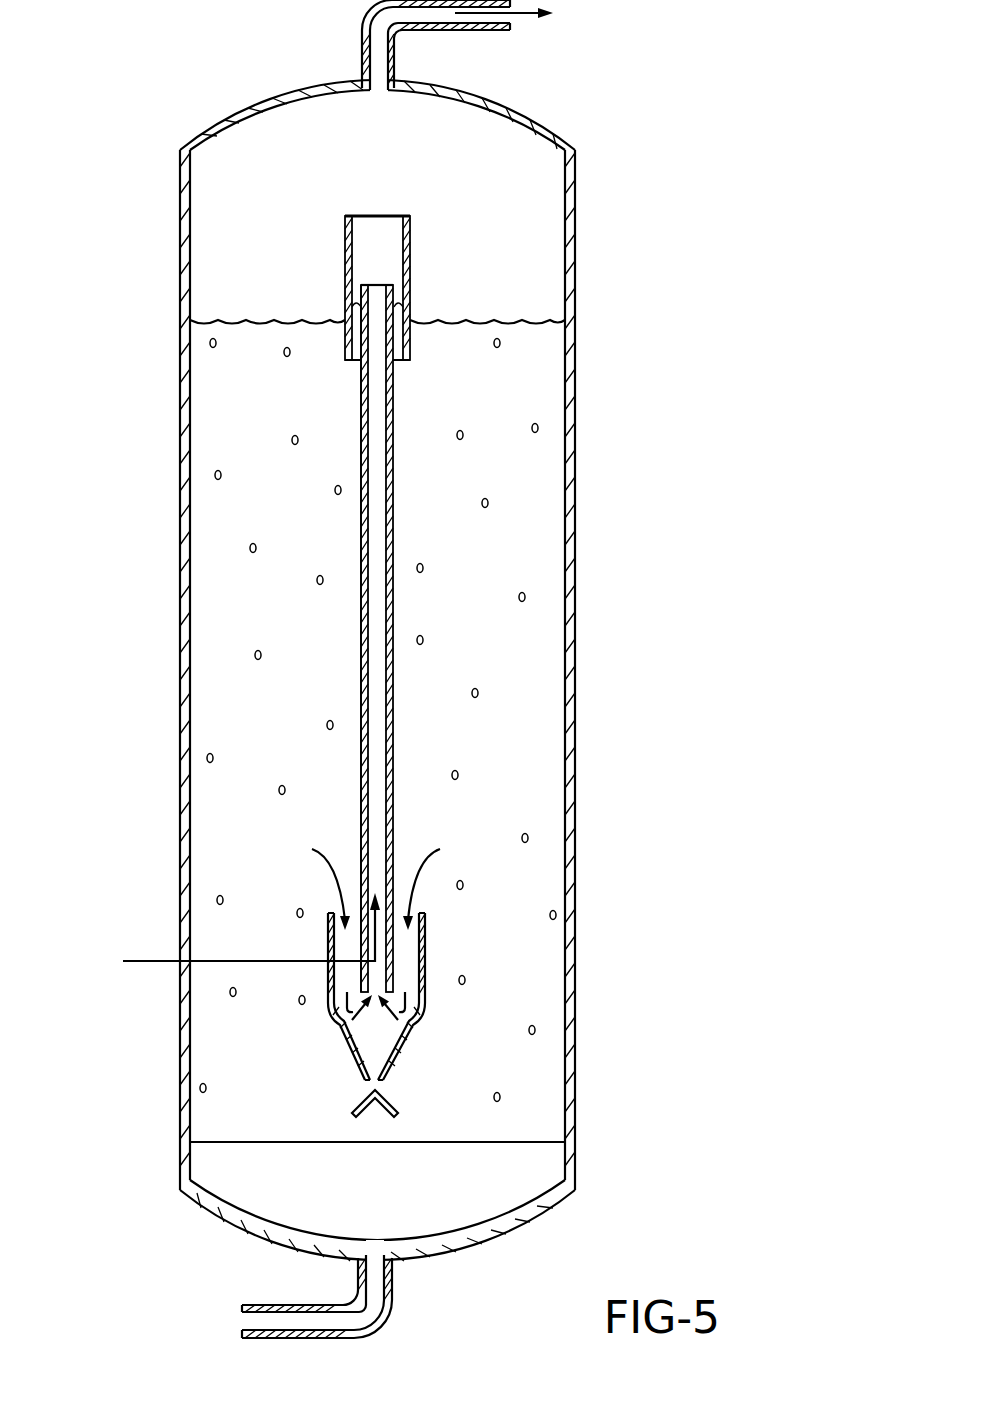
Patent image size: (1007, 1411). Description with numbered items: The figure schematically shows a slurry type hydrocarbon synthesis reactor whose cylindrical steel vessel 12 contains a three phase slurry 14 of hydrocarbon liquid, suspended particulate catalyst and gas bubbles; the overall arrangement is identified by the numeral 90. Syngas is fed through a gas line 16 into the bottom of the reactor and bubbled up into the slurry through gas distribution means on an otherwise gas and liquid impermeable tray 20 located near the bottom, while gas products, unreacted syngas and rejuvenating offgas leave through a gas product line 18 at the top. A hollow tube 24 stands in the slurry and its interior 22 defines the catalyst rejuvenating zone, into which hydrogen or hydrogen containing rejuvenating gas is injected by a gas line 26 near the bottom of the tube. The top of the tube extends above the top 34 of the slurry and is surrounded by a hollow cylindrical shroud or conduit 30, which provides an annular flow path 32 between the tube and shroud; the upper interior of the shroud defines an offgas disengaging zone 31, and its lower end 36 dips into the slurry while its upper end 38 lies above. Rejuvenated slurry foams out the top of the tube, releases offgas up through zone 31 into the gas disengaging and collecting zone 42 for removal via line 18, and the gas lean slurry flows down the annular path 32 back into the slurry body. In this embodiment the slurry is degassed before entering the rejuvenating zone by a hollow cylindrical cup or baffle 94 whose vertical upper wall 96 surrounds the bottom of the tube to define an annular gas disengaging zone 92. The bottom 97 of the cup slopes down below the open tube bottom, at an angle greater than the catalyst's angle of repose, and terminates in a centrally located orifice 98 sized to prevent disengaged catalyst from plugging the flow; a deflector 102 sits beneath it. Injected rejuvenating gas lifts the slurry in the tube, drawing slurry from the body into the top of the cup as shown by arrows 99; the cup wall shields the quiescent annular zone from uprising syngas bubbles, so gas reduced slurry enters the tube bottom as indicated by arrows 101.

The cylindrical steel vessel 12 is at (577, 393).
The three phase slurry 14 is at (250, 388).
The gas line 16 is at (278, 1305).
The gas product line 18 is at (463, 32).
The tray 20 is at (545, 1140).
The catalyst rejuvenating zone 22 is at (380, 440).
The hollow tube 24 is at (360, 410).
The gas line 26 is at (160, 961).
The shroud or conduit 30 is at (412, 230).
The offgas disengaging zone 31 is at (392, 259).
The annular flow path 32 is at (400, 298).
The top of the reactive slurry 34 is at (220, 322).
The lower end of outer tube 36 is at (408, 360).
The closed upper end 38 is at (350, 217).
The gas disengaging and collecting zone 42 is at (474, 146).
The separator apparatus 90 is at (157, 125).
The gas disengaging zone 92 is at (410, 946).
The cup or baffle 94 is at (338, 1022).
The vertical upper wall 96 is at (330, 940).
The bottom of the cup 97 is at (410, 1038).
The orifice 98 is at (383, 1086).
The arrows 99 is at (373, 884).
The arrows 101 is at (406, 1010).
The deflector 102 is at (364, 1107).